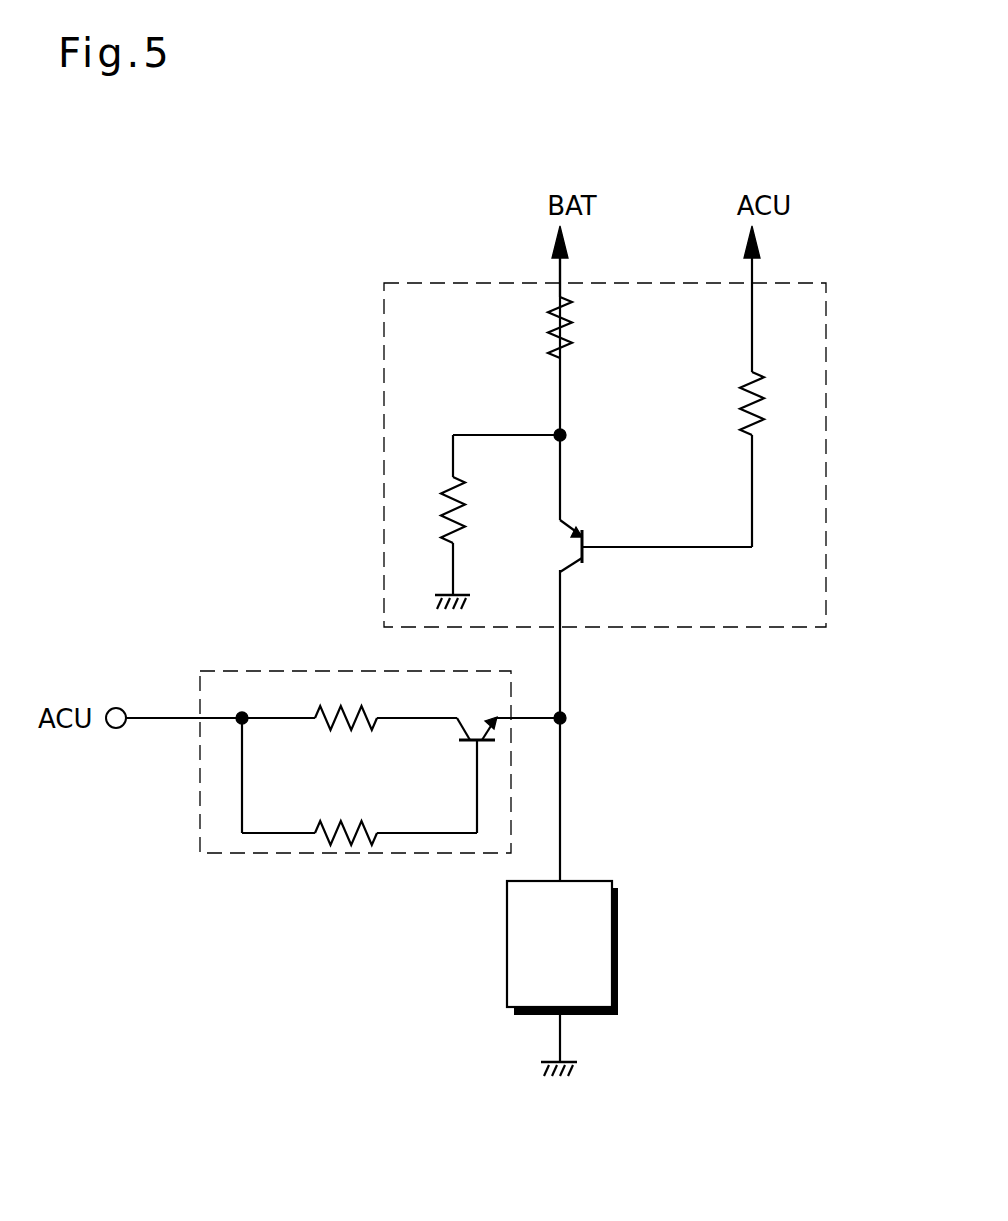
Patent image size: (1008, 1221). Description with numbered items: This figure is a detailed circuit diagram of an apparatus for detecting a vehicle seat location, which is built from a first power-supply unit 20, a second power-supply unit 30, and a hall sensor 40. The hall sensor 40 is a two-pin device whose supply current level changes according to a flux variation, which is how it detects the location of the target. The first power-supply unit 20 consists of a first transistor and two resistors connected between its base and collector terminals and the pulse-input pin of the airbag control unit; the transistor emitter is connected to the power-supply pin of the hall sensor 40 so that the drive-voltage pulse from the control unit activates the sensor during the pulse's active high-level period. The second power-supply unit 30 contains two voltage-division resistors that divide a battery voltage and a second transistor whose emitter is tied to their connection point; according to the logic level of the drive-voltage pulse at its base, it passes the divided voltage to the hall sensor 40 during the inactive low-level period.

The first power-supply unit 20 is at (433, 853).
The second power-supply unit 30 is at (826, 532).
The hall sensor 40 is at (618, 948).